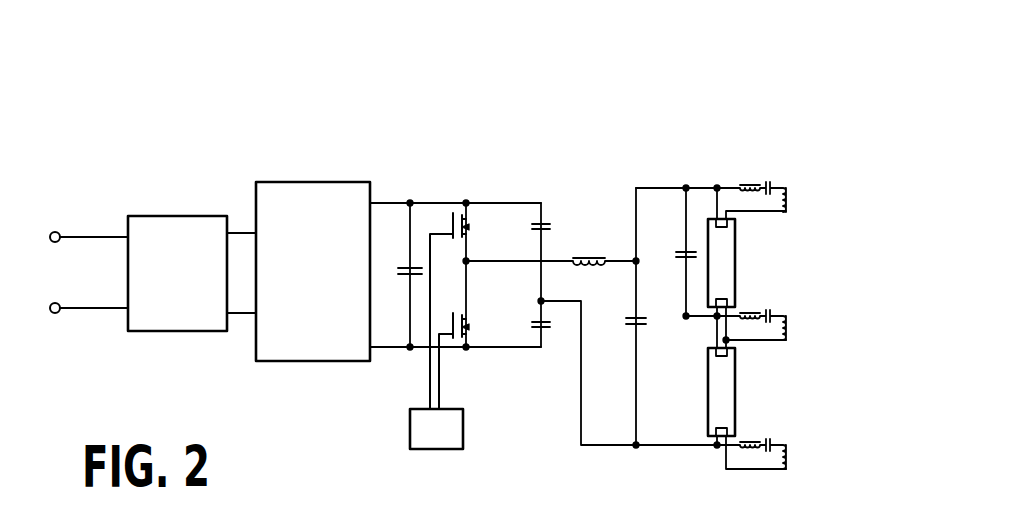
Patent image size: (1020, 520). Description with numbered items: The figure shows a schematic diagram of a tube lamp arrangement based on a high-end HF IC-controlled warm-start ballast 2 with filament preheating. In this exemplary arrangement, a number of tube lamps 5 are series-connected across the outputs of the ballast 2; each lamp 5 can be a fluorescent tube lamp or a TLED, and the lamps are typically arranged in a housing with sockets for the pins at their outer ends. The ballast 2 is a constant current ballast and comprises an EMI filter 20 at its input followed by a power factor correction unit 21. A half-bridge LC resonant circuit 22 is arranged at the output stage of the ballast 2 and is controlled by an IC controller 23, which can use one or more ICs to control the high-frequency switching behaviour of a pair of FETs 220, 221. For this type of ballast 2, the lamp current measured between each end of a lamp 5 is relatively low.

The ballast 2 is at (438, 94).
The EMI filter 20 is at (183, 216).
The power factor correction unit 21 is at (325, 182).
The half-bridge LC resonant circuit 22 is at (635, 197).
The FET 220 is at (472, 220).
The FET 221 is at (477, 321).
The IC controller 23 is at (432, 437).
The tube lamp 5 is at (723, 263).